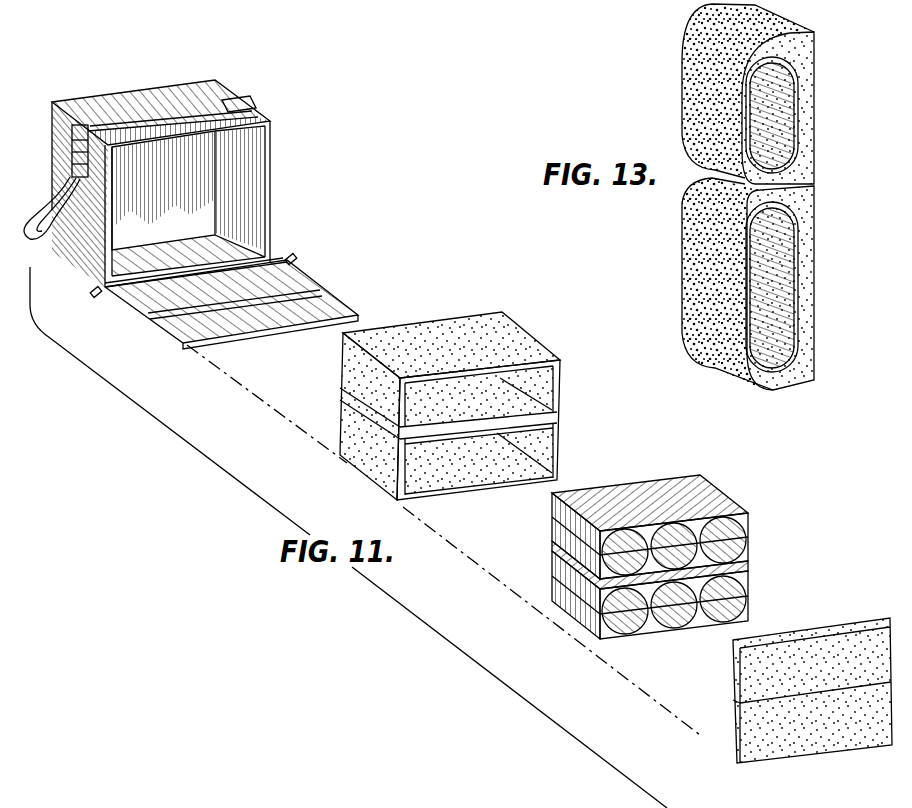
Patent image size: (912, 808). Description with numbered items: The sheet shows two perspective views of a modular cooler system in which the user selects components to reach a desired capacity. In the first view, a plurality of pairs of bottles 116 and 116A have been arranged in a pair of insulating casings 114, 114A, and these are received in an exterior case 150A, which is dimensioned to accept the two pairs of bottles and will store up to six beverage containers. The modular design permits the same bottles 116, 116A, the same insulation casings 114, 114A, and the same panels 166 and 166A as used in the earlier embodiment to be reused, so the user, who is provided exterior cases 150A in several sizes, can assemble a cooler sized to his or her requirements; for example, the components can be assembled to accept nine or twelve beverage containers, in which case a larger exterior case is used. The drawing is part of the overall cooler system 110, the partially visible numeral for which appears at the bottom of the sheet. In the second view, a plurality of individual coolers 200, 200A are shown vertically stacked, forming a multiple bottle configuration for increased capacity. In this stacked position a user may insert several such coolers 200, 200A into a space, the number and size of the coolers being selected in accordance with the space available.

In FIG. 11, the shipping container system 110 is at (265, 804).
In FIG. 11, the insulating casing 114 is at (560, 440).
In FIG. 11, the insulating casing 114A is at (560, 386).
In FIG. 11, the bottle 116 is at (750, 548).
In FIG. 11, the bottle 116A is at (750, 522).
In FIG. 11, the case 150A is at (277, 193).
In FIG. 11, the panel 166 is at (833, 645).
In FIG. 11, the panel 166A is at (822, 742).
In FIG. 13, the cooler 200 is at (672, 279).
In FIG. 13, the cooler 200A is at (680, 95).